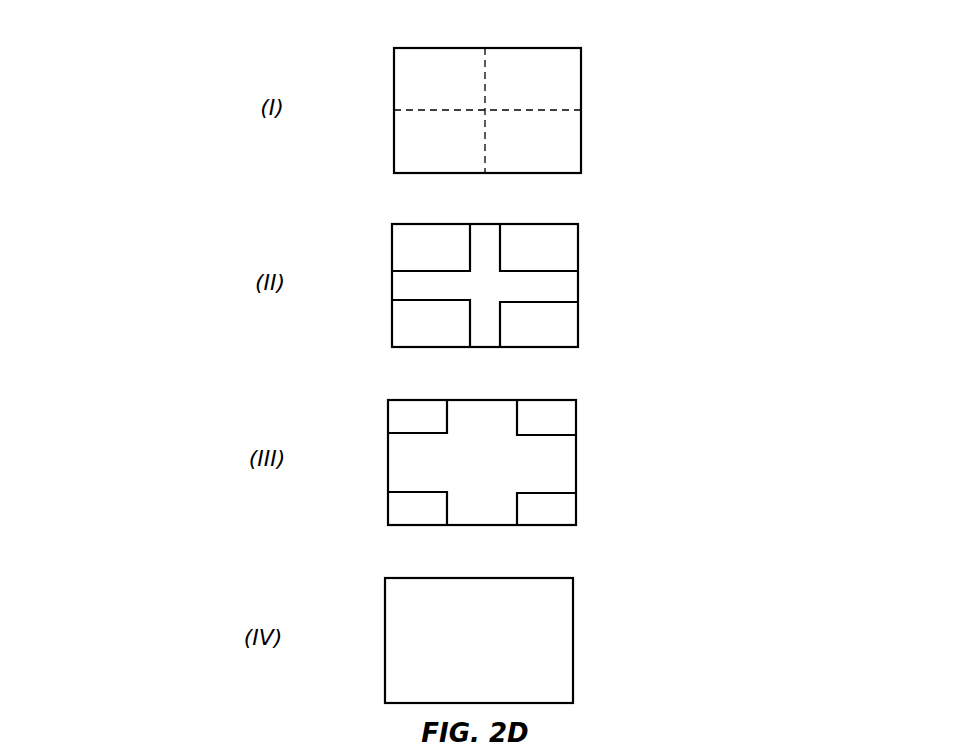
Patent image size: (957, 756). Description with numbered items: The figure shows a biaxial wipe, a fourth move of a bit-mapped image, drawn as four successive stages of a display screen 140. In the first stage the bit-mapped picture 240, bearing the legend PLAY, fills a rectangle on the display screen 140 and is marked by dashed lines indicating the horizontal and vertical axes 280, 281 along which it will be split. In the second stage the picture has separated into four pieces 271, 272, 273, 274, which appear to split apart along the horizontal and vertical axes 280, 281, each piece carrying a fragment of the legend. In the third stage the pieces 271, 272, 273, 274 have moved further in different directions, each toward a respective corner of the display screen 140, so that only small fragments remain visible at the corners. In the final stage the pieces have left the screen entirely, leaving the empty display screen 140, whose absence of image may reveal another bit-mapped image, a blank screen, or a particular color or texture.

The display screen 140 is at (392, 168).
The bit-mapped picture 240 is at (570, 77).
The piece of bit-mapped picture 271 is at (400, 77).
The piece of bit-mapped picture 272 is at (568, 100).
The piece of bit-mapped picture 273 is at (400, 157).
The piece of bit-mapped picture 274 is at (567, 155).
The horizontal axis 280 is at (402, 108).
The vertical axis 281 is at (487, 163).